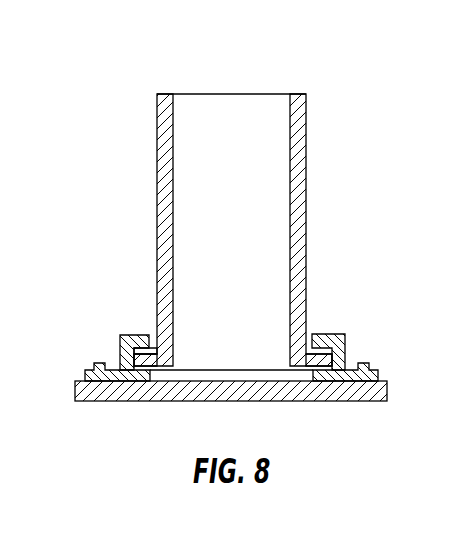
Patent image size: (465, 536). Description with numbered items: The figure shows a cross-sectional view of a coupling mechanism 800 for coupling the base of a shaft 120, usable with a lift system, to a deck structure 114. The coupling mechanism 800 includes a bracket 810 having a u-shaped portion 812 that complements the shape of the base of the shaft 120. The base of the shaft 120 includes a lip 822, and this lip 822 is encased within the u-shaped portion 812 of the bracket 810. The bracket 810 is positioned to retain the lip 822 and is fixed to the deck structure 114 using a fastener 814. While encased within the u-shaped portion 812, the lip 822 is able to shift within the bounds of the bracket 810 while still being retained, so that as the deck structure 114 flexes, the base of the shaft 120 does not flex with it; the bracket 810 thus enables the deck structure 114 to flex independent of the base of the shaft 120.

The coupling mechanism 800 is at (104, 58).
The shaft 120 is at (157, 223).
The bracket 810 is at (133, 335).
The u-shaped portion 812 is at (150, 358).
The lip 822 is at (138, 362).
The fastener 814 is at (94, 366).
The deck structure 114 is at (263, 401).